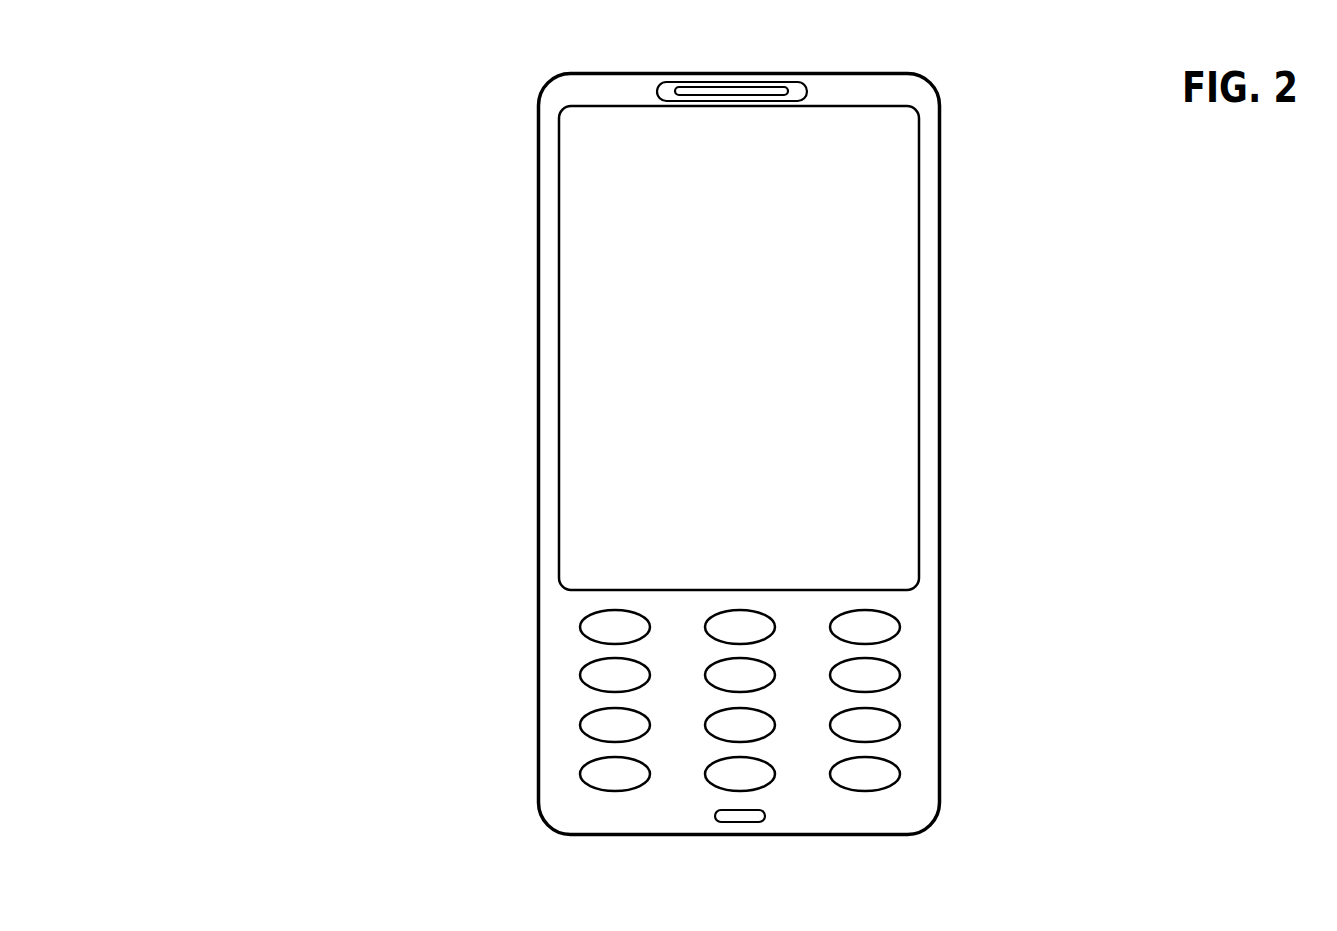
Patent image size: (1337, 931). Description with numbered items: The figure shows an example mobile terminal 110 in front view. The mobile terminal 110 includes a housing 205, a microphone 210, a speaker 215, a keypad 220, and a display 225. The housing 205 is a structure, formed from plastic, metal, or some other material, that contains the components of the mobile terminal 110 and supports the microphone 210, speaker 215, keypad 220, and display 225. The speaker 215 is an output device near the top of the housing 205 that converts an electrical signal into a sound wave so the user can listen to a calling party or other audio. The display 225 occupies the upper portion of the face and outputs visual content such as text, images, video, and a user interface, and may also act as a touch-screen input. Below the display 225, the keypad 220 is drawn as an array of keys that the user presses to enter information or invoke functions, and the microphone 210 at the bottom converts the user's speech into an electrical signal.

The mobile terminal 110 is at (292, 84).
The housing 205 is at (538, 378).
The microphone 210 is at (765, 816).
The speaker 215 is at (807, 93).
The keypad 220 is at (522, 613).
The display 225 is at (905, 324).